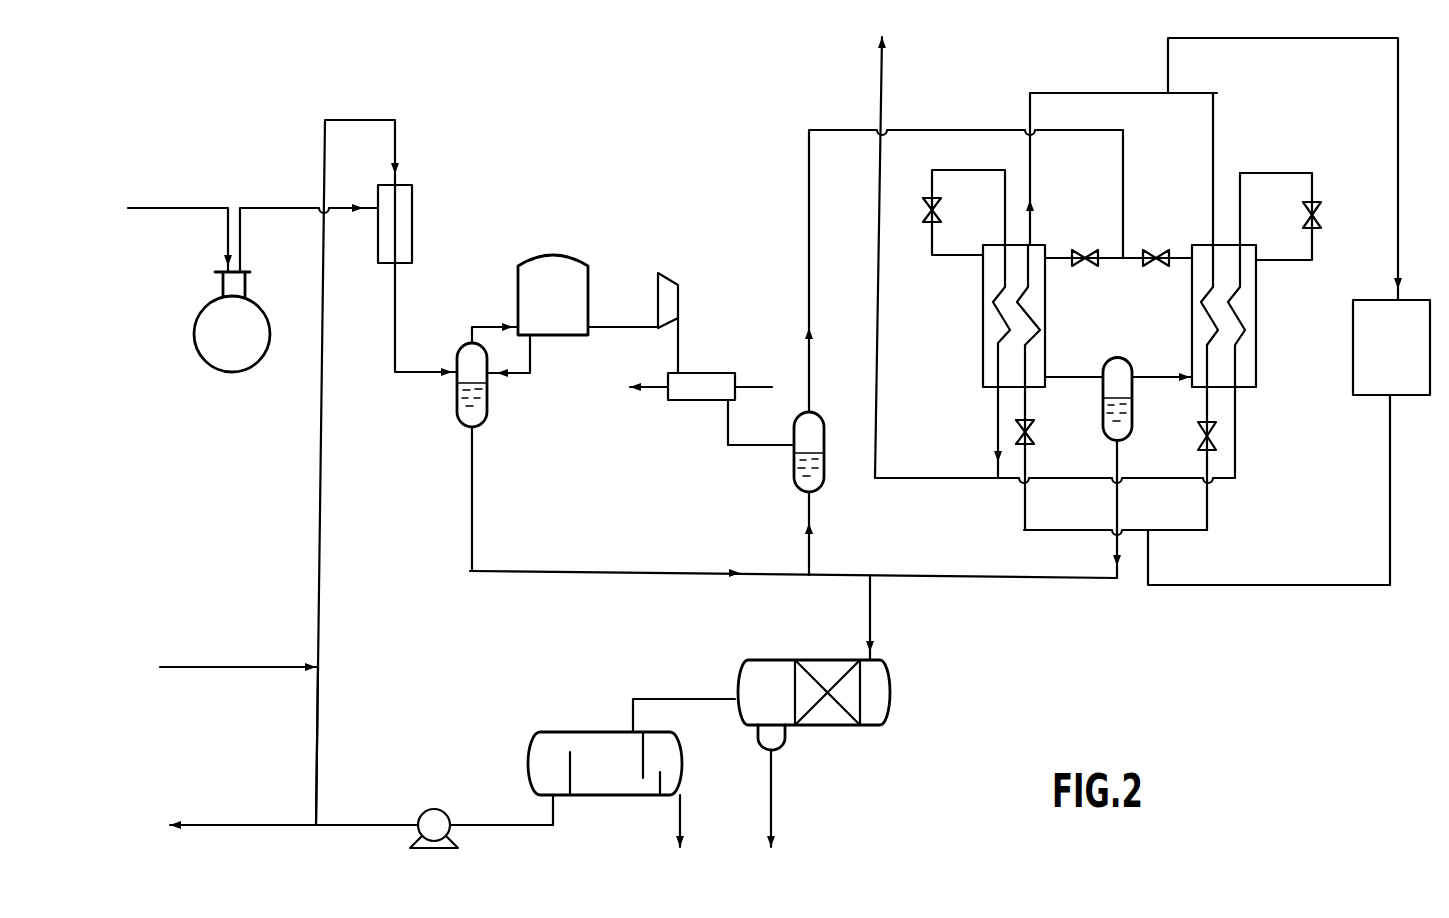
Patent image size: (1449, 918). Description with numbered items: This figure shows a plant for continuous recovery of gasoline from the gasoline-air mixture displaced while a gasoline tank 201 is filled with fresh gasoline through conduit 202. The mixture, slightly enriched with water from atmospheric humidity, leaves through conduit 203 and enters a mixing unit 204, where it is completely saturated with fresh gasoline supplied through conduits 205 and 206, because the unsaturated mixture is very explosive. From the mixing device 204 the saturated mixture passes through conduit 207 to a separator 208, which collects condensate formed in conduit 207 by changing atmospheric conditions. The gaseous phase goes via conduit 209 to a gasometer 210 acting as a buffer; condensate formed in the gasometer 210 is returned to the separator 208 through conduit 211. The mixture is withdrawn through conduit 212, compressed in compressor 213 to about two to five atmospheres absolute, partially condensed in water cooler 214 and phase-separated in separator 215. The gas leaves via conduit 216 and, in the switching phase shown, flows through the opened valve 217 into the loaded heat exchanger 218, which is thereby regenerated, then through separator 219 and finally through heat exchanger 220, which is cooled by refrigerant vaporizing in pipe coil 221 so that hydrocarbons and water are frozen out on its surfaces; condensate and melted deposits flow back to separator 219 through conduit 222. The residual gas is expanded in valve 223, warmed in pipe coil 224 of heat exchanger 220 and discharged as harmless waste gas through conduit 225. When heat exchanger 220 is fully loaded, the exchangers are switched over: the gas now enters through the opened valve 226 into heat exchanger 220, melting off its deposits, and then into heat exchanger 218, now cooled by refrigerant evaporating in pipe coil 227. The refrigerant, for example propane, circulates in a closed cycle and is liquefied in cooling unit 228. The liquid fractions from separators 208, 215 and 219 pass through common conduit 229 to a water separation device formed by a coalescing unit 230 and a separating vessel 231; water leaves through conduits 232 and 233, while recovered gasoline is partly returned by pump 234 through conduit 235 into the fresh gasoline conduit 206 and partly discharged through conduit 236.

The gasoline tank 201 is at (230, 363).
The conduit 202 is at (176, 205).
The conduit 203 is at (276, 207).
The mixing unit 204 is at (412, 241).
The conduit 205 is at (240, 662).
The conduit 206 is at (319, 568).
The conduit 207 is at (395, 343).
The separator 208 is at (487, 405).
The conduit 209 is at (482, 323).
The gasometer 210 is at (582, 296).
The conduit 211 is at (530, 358).
The conduit 212 is at (623, 330).
The compressor 213 is at (672, 303).
The water cooler 214 is at (700, 400).
The separator 215 is at (793, 477).
The conduit 216 is at (809, 220).
The valve 217 is at (1075, 246).
The heat exchanger 218 is at (1044, 300).
The separator 219 is at (1132, 405).
The heat exchanger 220 is at (1248, 317).
The pipe coil 221 is at (1210, 310).
The conduit 222 is at (1155, 376).
The valve 223 is at (1318, 222).
The pipe coil 224 is at (1232, 302).
The conduit 225 is at (883, 102).
The valve 226 is at (1162, 235).
The pipe coil 227 is at (1035, 342).
The cooling unit 228 is at (1352, 362).
The common conduit 229 is at (871, 628).
The coalescing unit 230 is at (890, 688).
The separating vessel 231 is at (553, 745).
The conduit 232 is at (771, 803).
The conduit 233 is at (680, 813).
The pump 234 is at (437, 811).
The conduit 235 is at (317, 752).
The conduit 236 is at (240, 817).